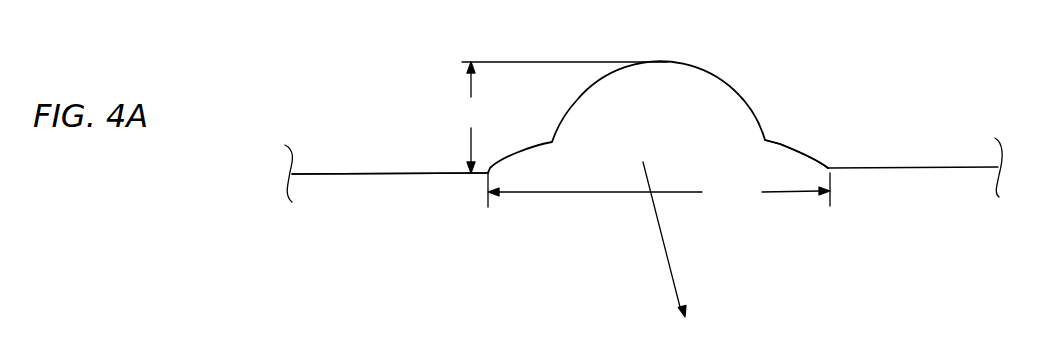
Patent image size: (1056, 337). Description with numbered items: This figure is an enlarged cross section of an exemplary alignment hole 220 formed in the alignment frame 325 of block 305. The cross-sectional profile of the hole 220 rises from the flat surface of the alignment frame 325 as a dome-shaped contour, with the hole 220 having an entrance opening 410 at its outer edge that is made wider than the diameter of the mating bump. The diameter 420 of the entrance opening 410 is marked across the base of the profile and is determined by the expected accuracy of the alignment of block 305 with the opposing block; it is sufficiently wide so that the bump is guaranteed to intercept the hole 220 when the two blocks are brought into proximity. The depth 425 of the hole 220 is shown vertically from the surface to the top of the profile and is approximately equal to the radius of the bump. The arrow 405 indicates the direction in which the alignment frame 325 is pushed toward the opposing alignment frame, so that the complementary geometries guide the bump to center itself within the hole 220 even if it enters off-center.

The block 305 is at (366, 116).
The alignment frame 325 is at (402, 182).
The hole 220 is at (742, 85).
The entrance opening 410 is at (810, 150).
The depth 425 is at (560, 117).
The diameter 420 is at (659, 189).
The arrow 405 is at (673, 268).